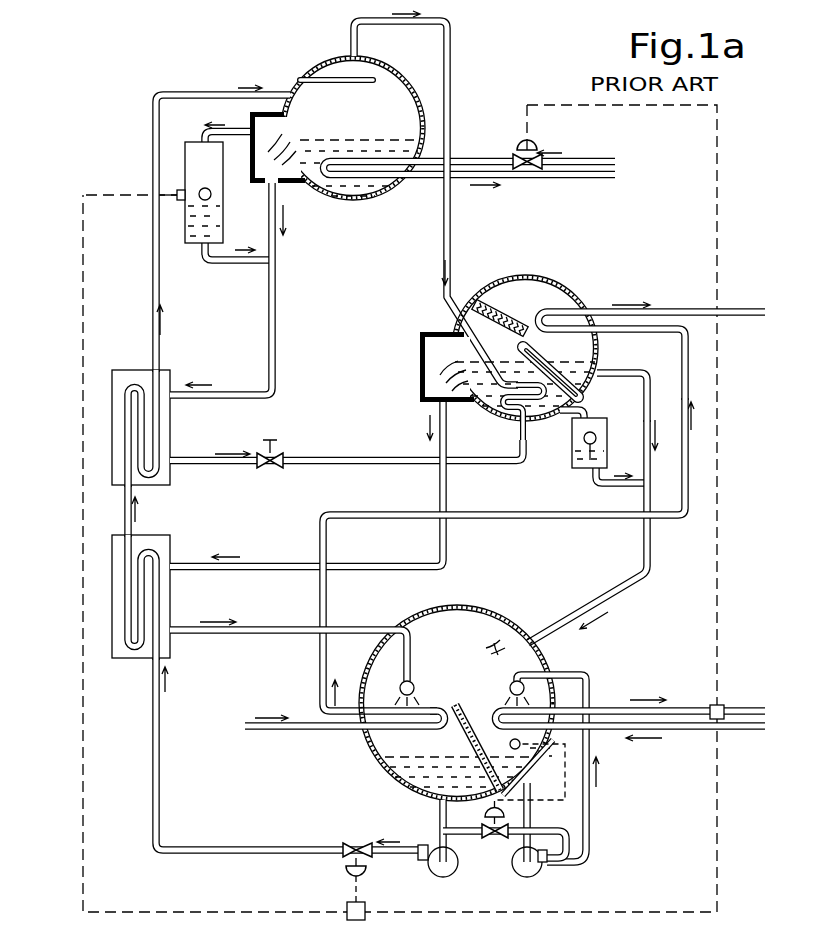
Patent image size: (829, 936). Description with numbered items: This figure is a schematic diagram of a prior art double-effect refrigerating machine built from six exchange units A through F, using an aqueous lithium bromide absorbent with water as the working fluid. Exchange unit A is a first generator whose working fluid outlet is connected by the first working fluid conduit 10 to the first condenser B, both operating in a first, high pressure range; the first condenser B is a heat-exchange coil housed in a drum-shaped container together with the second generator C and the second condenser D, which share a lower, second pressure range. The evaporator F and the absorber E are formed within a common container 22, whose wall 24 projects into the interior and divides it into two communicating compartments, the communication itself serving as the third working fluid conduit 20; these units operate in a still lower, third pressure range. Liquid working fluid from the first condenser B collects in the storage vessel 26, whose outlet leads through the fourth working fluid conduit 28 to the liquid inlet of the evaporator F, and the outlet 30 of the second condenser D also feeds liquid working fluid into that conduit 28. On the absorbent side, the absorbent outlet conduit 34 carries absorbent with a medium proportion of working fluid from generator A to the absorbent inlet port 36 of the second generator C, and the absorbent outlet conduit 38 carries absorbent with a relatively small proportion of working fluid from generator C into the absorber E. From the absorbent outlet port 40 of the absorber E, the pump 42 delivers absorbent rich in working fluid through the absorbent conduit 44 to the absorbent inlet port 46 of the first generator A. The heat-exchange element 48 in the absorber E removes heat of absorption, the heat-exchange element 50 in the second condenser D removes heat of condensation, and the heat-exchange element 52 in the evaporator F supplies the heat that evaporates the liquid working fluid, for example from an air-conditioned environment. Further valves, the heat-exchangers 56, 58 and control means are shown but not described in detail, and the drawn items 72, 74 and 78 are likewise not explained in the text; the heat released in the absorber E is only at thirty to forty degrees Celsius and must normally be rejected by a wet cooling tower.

The first working fluid conduit 10 is at (453, 90).
The third working fluid conduit 20 is at (454, 681).
The common container 22 is at (488, 607).
The wall 24 is at (456, 702).
The storage vessel 26 is at (606, 444).
The fourth working fluid conduit 28 is at (653, 550).
The outlet 30 is at (606, 368).
The absorbent outlet conduit 34 is at (276, 316).
The absorbent inlet port 36 is at (518, 426).
The absorbent outlet conduit 38 is at (472, 518).
The absorbent outlet port 40 is at (437, 814).
The pump 42 is at (432, 871).
The absorbent conduit 44 is at (161, 803).
The absorbent inlet port 46 is at (288, 90).
The heat-exchange element 48 is at (388, 710).
The heat-exchange element 50 is at (566, 330).
The heat-exchange element 52 is at (566, 727).
The heat-exchanger 56 is at (112, 590).
The heat-exchanger 58 is at (112, 428).
The heat exchanger coil in vessel A 72 is at (393, 160).
The separator element 74 is at (490, 302).
The vessel B wall 78 is at (525, 276).